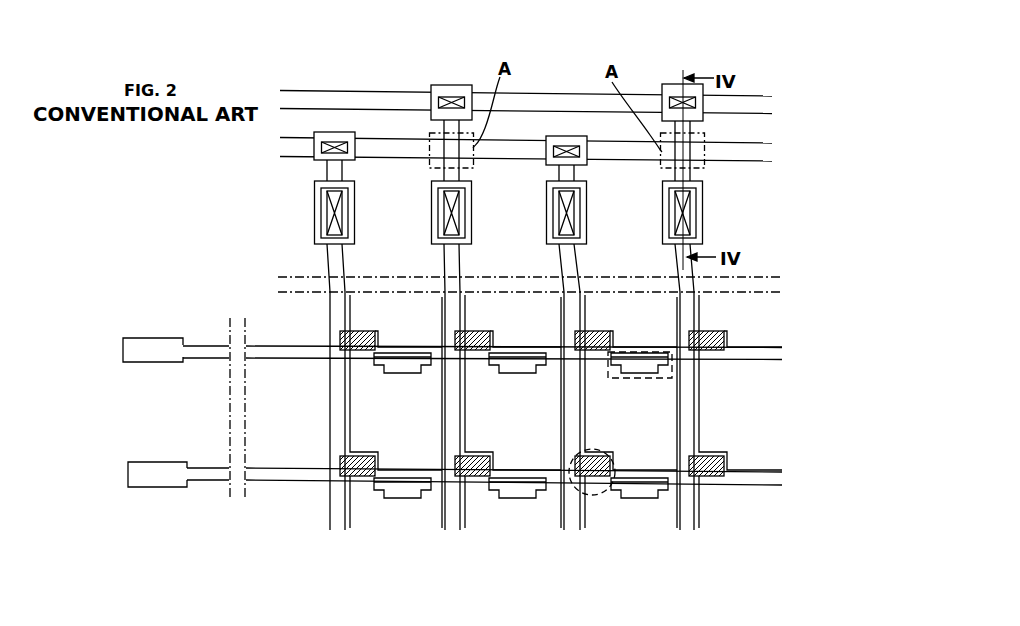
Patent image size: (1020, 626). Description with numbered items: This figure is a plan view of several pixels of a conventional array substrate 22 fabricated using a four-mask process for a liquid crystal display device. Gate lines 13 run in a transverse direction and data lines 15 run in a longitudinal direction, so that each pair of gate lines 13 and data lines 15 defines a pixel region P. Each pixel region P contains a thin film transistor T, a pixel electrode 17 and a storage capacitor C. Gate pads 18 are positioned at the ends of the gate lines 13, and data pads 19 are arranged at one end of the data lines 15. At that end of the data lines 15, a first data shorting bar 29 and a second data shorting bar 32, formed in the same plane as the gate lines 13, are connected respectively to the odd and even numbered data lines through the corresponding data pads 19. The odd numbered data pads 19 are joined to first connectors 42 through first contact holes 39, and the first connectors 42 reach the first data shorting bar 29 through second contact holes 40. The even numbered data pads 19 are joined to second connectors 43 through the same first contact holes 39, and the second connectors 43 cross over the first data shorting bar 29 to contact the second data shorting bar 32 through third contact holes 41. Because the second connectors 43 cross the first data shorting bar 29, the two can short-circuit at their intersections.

The gate line 13 is at (777, 478).
The data line 15 is at (703, 510).
The pixel electrode 17 is at (594, 411).
The gate pad 18 is at (153, 348).
The data pad 19 is at (703, 227).
The array substrate 22 is at (225, 230).
The first data shorting bar 29 is at (770, 153).
The second data shorting bar 32 is at (768, 103).
The first contact hole 39 is at (562, 206).
The second contact hole 40 is at (568, 143).
The third contact hole 41 is at (675, 102).
The first connector 42 is at (318, 200).
The second connector 43 is at (434, 209).
The storage capacitor C is at (698, 370).
The pixel region P is at (658, 403).
The thin film transistor T is at (578, 500).